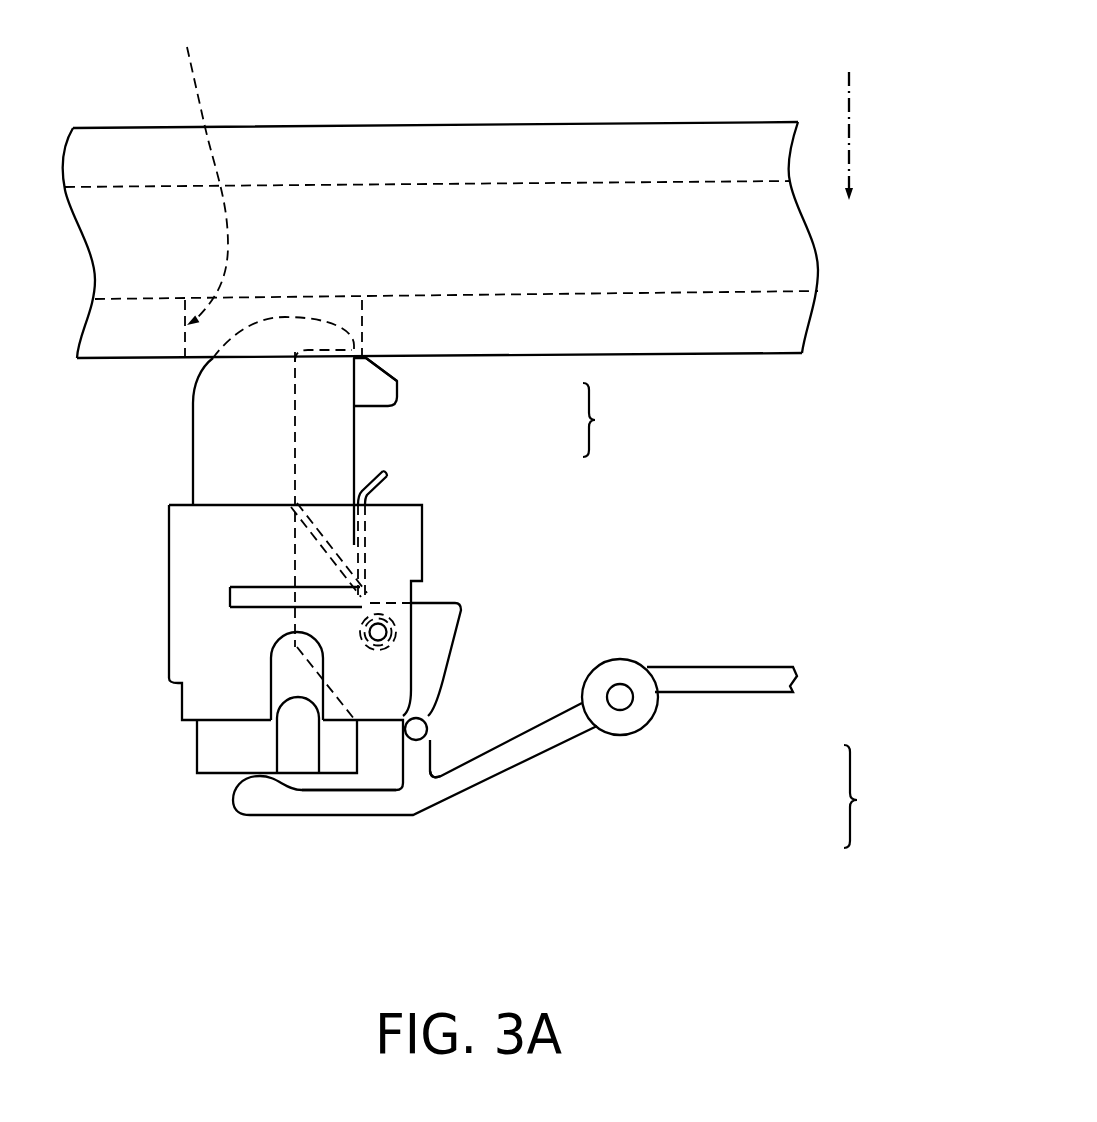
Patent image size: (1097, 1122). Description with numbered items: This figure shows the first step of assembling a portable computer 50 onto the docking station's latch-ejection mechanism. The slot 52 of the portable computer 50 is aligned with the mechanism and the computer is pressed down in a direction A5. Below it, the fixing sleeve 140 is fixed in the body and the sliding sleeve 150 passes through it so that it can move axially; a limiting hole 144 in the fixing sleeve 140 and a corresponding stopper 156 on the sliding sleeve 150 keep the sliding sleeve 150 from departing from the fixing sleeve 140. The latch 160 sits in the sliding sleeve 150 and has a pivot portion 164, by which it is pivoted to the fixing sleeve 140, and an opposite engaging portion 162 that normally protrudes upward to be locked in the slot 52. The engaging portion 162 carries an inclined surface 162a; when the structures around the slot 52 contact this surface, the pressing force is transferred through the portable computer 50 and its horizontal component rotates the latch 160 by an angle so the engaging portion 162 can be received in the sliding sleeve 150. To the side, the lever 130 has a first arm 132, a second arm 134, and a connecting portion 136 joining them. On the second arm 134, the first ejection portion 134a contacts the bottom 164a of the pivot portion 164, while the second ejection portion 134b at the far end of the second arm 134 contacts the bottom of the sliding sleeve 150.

The portable computer 50 is at (610, 130).
The slot 52 is at (199, 167).
The direction A5 is at (849, 118).
The sliding sleeve 150 is at (185, 442).
The engaging portion 162 is at (390, 389).
The inclined surface 162a is at (383, 348).
The latch 160 is at (610, 420).
The pivot portion 164 is at (449, 613).
The bottom of the pivot portion 164a is at (398, 722).
The fixing sleeve 140 is at (147, 618).
The limiting hole 144 is at (275, 660).
The stopper 156 is at (283, 742).
The second arm 134 is at (522, 752).
The first ejection portion 134a is at (420, 765).
The second ejection portion 134b is at (263, 802).
The connecting portion 136 is at (637, 720).
The first arm 132 is at (728, 680).
The lever 130 is at (872, 796).